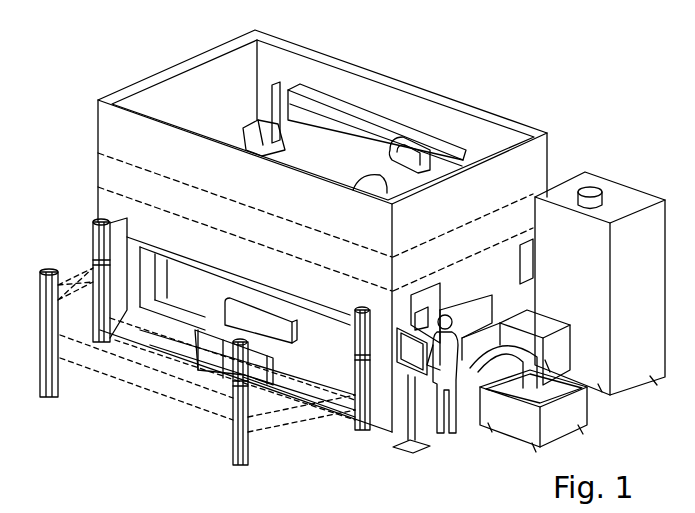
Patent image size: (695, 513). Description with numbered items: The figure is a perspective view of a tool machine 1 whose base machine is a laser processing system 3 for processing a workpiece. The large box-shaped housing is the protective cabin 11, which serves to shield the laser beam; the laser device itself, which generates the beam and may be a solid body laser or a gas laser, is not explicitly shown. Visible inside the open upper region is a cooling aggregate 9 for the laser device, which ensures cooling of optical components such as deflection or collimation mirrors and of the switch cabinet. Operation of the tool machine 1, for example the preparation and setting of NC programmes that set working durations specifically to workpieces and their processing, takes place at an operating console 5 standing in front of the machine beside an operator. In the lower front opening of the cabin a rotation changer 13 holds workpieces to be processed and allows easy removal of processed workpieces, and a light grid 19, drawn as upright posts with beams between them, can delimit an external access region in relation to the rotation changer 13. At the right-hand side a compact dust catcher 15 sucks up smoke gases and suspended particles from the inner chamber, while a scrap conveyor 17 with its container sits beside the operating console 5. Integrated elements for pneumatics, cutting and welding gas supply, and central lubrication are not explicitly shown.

The tool machine 1 is at (507, 52).
The laser processing system 3 is at (317, 167).
The operating console 5 is at (398, 368).
The cooling aggregate 9 is at (250, 137).
The protective cabin 11 is at (530, 165).
The rotation changer 13 is at (223, 337).
The compact dust catcher 15 is at (612, 192).
The scrap conveyor 17 is at (533, 350).
The light grid 19 is at (247, 437).